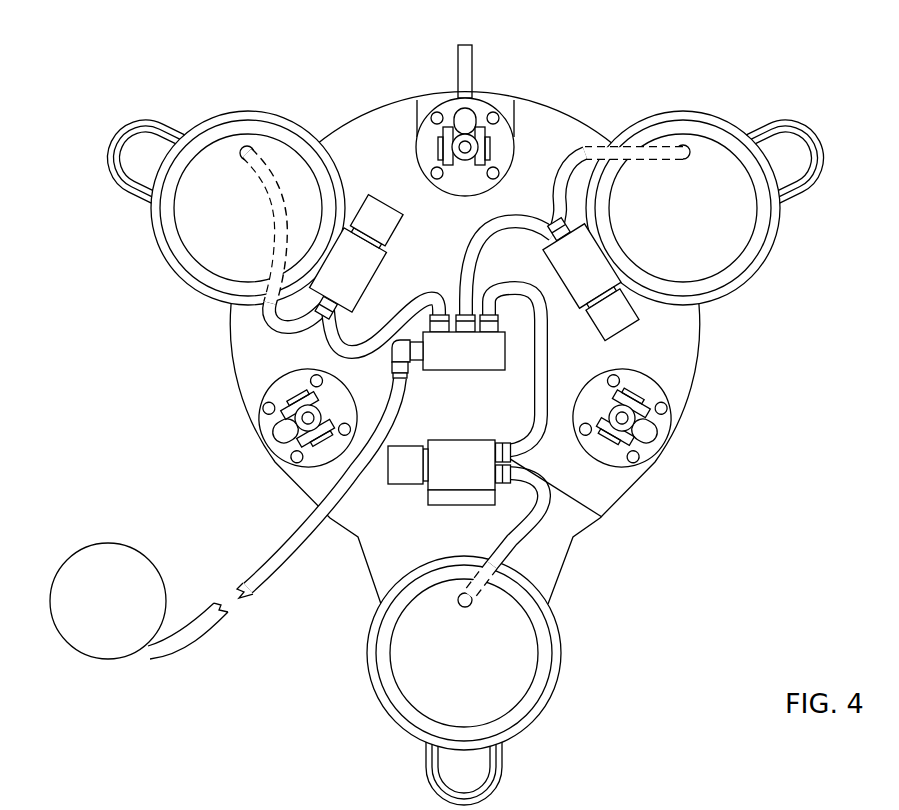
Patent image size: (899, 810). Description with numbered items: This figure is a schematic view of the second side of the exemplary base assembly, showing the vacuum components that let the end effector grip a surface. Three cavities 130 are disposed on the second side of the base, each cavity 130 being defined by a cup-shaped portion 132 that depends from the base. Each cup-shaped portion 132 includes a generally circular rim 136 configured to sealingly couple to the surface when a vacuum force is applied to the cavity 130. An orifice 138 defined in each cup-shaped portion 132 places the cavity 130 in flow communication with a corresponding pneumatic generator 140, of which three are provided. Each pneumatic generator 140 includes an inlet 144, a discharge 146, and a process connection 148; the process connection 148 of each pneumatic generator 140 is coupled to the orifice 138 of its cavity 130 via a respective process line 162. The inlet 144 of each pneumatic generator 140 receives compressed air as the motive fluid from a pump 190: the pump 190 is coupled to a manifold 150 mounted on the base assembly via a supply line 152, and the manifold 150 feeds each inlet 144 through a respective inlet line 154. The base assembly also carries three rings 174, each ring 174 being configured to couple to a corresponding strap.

The cavity 130 is at (203, 213).
The cup-shaped portion 132 is at (228, 120).
The rim 136 is at (273, 110).
The orifice 138 is at (255, 148).
The pneumatic generator 140 is at (372, 258).
The inlet 144 is at (368, 291).
The discharge 146 is at (377, 220).
The process connection 148 is at (326, 312).
The manifold 150 is at (458, 352).
The supply line 152 is at (260, 563).
The inlet line 154 is at (337, 347).
The process line 162 is at (272, 318).
The ring 174 is at (123, 137).
The pump 190 is at (122, 614).